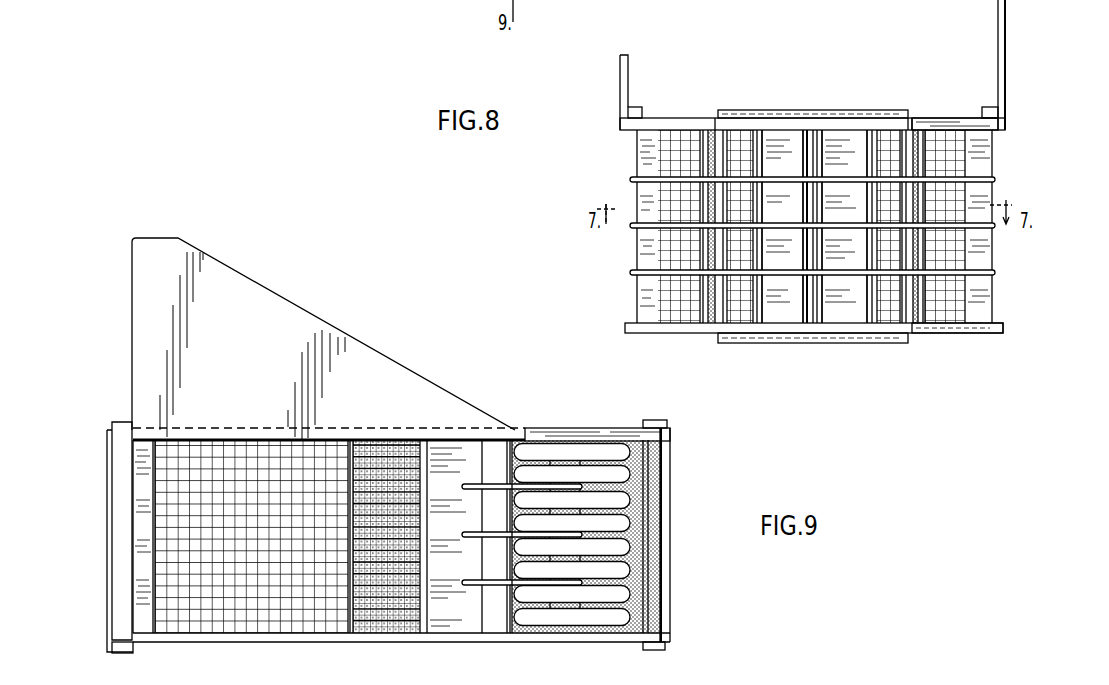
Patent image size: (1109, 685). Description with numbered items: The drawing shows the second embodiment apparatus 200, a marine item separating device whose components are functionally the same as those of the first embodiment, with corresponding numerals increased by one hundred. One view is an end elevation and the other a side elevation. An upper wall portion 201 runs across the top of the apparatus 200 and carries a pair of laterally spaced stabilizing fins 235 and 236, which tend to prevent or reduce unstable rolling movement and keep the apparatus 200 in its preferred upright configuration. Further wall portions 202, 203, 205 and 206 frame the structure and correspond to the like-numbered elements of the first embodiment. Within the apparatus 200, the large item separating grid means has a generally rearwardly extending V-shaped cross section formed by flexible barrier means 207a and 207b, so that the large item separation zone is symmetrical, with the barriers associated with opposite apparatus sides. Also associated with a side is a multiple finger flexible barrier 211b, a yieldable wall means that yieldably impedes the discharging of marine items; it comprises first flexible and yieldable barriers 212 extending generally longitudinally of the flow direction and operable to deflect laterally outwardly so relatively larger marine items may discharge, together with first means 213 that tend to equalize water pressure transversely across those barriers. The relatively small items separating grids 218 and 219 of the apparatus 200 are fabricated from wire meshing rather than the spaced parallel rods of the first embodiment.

In FIG. 8, the second embodiment apparatus 200 is at (783, 96).
In FIG. 9, the second embodiment apparatus 200 is at (615, 684).
In FIG. 8, the upper wall portion 201 is at (922, 126).
In FIG. 9, the upper wall portion 201 is at (547, 432).
In FIG. 8, the wall portion 202 is at (918, 328).
In FIG. 9, the wall portion 202 is at (237, 638).
In FIG. 8, the wall portion 203 is at (720, 312).
In FIG. 9, the wall portion 205 is at (662, 426).
In FIG. 9, the wall portion 206 is at (121, 618).
In FIG. 8, the flexible barrier means 207a is at (848, 278).
In FIG. 8, the flexible barrier means 207b is at (783, 278).
In FIG. 9, the multiple finger flexible barrier 211b is at (634, 524).
In FIG. 9, the first flexible and yieldable barriers 212 is at (533, 630).
In FIG. 9, the pressure equalizing means 213 is at (596, 606).
In FIG. 8, the small items separating grid 218 is at (672, 312).
In FIG. 9, the small items separating grid 218 is at (341, 618).
In FIG. 8, the small items separating grid 219 is at (955, 300).
In FIG. 8, the stabilizing fin 235 is at (631, 76).
In FIG. 9, the stabilizing fin 235 is at (263, 387).
In FIG. 8, the stabilizing fin 236 is at (997, 26).